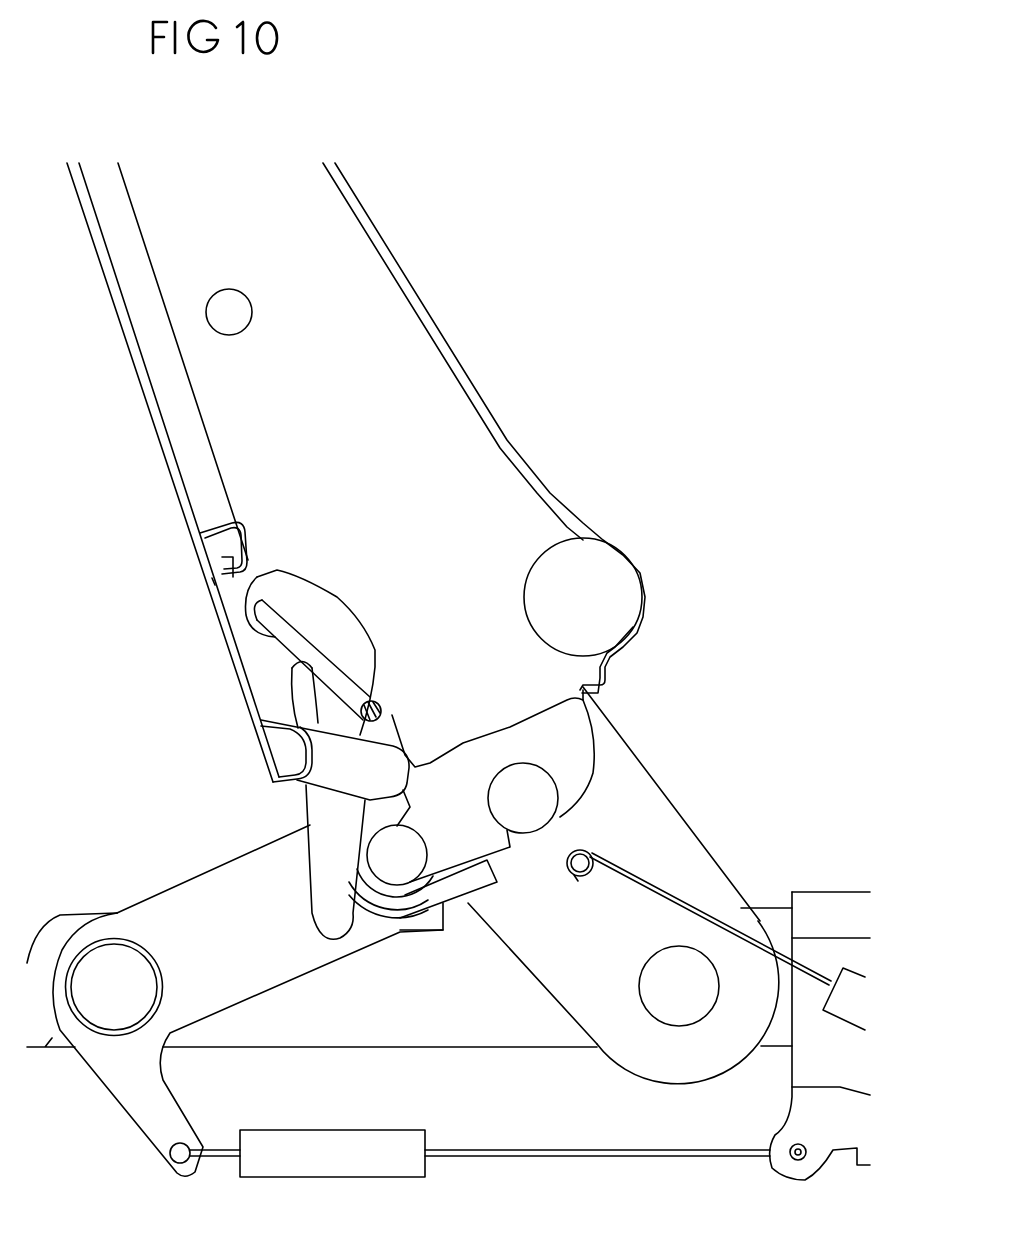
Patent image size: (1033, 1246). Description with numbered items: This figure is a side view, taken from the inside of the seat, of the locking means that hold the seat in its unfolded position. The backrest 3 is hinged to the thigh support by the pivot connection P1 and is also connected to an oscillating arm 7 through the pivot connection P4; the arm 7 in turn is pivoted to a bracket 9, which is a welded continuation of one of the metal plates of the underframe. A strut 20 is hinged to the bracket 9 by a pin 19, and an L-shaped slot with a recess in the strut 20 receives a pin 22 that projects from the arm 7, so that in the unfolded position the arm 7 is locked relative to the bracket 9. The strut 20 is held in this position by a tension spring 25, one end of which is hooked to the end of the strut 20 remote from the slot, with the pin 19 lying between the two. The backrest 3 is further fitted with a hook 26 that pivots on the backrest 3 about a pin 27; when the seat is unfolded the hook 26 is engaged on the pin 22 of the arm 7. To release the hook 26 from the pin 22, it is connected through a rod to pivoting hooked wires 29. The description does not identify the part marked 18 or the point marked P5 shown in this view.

The backrest 3 is at (422, 373).
The pivot connection P4 is at (227, 315).
The pivot connection P1 is at (622, 587).
The hook 26 is at (577, 760).
The pin 18 is at (347, 688).
The pin 22 is at (537, 810).
The pivoting hooked wires 29 is at (333, 843).
The pin 27 is at (408, 867).
The pin 19 is at (100, 973).
The strut 20 is at (180, 903).
The bracket 9 is at (322, 1017).
The oscillating arm 7 is at (690, 882).
The pivot point P5 is at (687, 983).
The tension spring 25 is at (368, 1150).